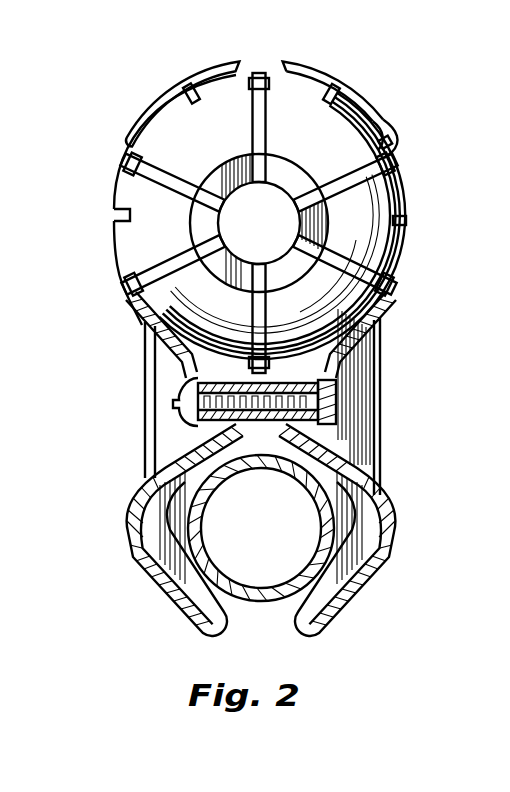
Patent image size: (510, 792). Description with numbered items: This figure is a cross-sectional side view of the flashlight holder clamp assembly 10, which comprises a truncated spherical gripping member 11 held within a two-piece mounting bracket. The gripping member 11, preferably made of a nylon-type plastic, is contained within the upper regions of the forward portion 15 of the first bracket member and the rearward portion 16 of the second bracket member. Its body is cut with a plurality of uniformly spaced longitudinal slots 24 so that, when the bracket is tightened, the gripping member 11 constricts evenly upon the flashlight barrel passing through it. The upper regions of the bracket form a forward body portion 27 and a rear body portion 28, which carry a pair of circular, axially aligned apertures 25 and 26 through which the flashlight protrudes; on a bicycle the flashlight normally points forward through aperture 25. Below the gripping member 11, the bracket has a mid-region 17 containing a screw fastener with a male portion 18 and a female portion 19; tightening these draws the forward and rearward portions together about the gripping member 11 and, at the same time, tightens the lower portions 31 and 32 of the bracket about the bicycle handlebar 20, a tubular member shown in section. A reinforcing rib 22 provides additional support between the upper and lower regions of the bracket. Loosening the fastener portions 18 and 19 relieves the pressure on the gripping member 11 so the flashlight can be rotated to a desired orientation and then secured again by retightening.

The flashlight holder clamp assembly 10 is at (364, 90).
The truncated spherical gripping member 11 is at (402, 246).
The forward portion 15 is at (130, 130).
The rearward portion 16 is at (395, 122).
The mid-region 17 is at (138, 381).
The male portion 18 is at (184, 427).
The female portion 19 is at (337, 414).
The bicycle handlebar 20 is at (252, 603).
The reinforcing rib 22 is at (145, 411).
The longitudinal slots 24 is at (392, 148).
The aperture 25 is at (110, 198).
The aperture 26 is at (412, 198).
The forward body portion 27 is at (190, 78).
The rear body portion 28 is at (316, 80).
The lower portion 31 is at (128, 522).
The lower portion 32 is at (391, 532).